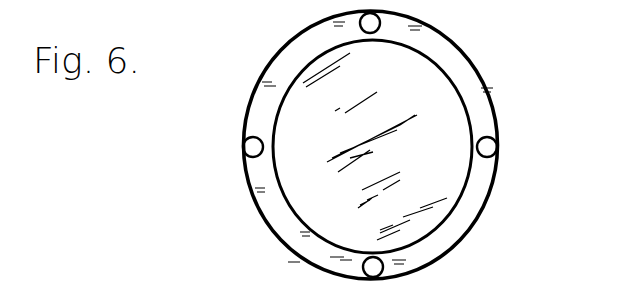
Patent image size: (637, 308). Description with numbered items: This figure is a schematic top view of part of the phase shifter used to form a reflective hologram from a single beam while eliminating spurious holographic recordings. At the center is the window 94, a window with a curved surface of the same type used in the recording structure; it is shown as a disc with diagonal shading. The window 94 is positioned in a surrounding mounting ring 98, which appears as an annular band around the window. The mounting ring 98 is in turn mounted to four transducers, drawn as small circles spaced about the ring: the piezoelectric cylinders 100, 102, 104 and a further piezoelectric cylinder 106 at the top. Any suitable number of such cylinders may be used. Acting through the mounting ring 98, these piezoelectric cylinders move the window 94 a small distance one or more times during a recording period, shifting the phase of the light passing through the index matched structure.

The window 94 is at (404, 171).
The mounting ring 98 is at (499, 120).
The piezoelectric cylinder 100 is at (245, 157).
The piezoelectric cylinder 102 is at (382, 270).
The piezoelectric cylinder 104 is at (492, 151).
The piezoelectric cylinder 106 is at (379, 27).